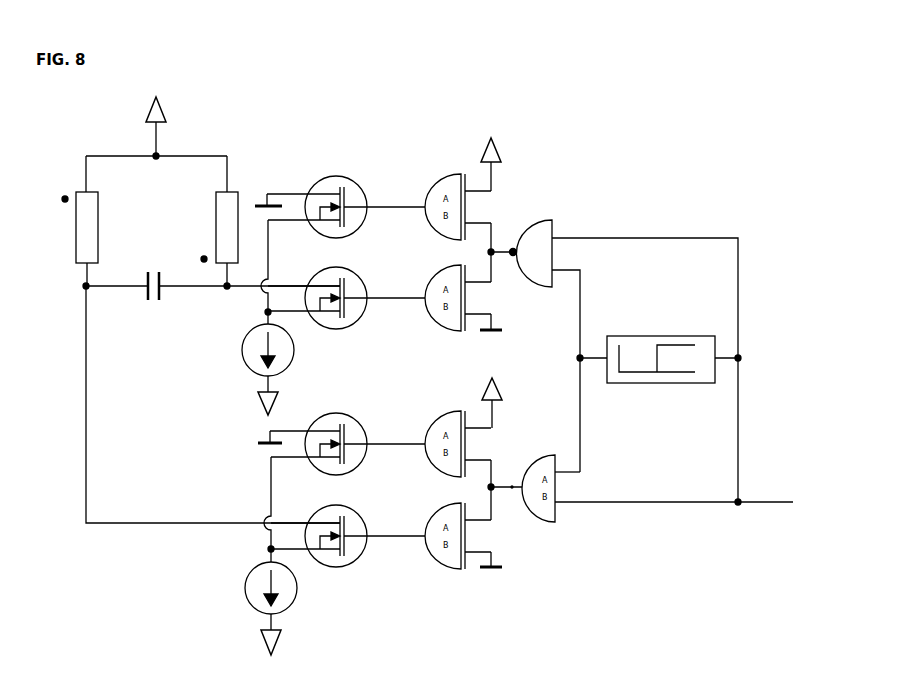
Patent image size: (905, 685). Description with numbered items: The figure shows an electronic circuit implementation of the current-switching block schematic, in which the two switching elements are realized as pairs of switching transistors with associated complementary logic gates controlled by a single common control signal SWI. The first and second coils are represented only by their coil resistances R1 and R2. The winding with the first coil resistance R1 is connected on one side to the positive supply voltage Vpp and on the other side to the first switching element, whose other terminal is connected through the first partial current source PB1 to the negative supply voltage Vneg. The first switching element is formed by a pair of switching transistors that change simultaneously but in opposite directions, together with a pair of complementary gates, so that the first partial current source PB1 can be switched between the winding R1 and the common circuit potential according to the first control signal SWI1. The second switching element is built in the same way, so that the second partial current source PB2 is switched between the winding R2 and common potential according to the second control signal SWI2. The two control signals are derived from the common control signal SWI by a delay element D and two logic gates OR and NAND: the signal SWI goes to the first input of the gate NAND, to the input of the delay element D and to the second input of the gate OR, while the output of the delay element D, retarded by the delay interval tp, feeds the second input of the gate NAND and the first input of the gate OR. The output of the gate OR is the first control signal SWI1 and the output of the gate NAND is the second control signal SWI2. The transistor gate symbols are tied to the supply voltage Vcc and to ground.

The first coil resistance R1 is at (72, 227).
The second coil resistance R2 is at (215, 227).
The first partial current source PB1 is at (255, 590).
The second partial current source PB2 is at (253, 352).
The first control signal SWI1 is at (514, 505).
The second control signal SWI2 is at (505, 243).
The common control signal SWI is at (674, 491).
The NAND gate NAND is at (532, 264).
The OR gate OR is at (538, 476).
The delay element D is at (661, 342).
The delay interval tp is at (657, 329).
The positive supply voltage Vpp is at (170, 125).
The supply voltage Vcc is at (501, 279).
The negative supply voltage Vneg is at (286, 515).